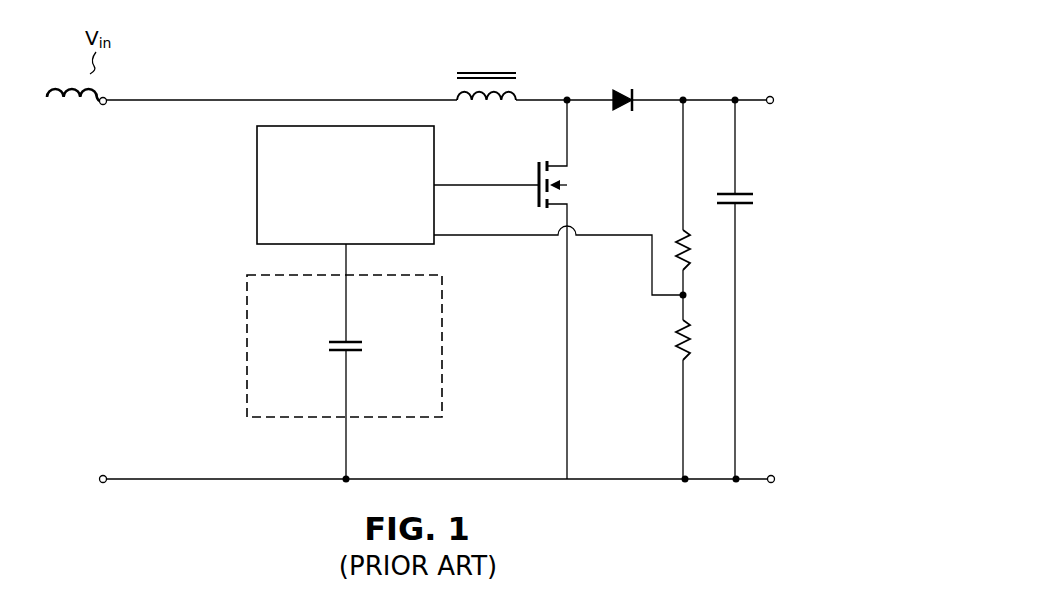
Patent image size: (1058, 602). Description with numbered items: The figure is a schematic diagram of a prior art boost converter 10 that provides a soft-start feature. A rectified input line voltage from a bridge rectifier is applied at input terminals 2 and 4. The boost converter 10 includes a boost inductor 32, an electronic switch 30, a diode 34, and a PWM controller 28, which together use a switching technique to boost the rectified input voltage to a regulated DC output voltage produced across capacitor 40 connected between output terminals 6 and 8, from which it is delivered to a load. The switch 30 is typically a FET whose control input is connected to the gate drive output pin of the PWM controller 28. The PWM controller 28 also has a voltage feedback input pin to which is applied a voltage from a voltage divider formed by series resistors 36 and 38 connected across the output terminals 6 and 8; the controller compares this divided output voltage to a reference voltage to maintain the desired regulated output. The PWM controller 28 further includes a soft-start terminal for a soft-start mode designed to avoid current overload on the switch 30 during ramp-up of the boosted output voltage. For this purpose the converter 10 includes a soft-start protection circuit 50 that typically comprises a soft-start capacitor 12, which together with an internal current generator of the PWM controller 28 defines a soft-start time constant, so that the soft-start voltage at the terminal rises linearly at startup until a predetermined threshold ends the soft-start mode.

The boost converter 10 is at (700, 48).
The input terminal 2 is at (103, 105).
The input terminal 4 is at (102, 475).
The output terminal 6 is at (770, 104).
The output terminal 8 is at (773, 474).
The soft-start capacitor 12 is at (338, 341).
The PWM controller 28 is at (257, 173).
The electronic switch 30 is at (536, 174).
The boost inductor 32 is at (502, 72).
The diode 34 is at (621, 85).
The resistor 36 is at (677, 237).
The resistor 38 is at (678, 346).
The capacitor 40 is at (746, 206).
The soft-start protection circuit 50 is at (247, 330).